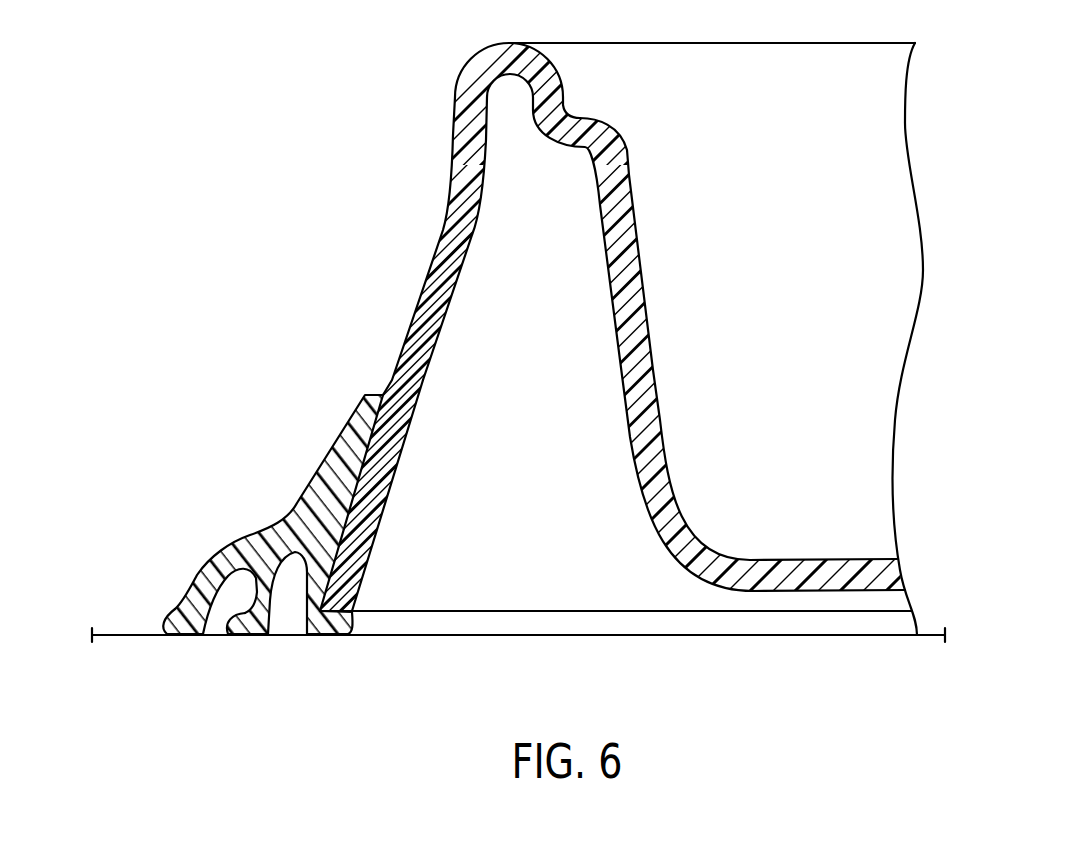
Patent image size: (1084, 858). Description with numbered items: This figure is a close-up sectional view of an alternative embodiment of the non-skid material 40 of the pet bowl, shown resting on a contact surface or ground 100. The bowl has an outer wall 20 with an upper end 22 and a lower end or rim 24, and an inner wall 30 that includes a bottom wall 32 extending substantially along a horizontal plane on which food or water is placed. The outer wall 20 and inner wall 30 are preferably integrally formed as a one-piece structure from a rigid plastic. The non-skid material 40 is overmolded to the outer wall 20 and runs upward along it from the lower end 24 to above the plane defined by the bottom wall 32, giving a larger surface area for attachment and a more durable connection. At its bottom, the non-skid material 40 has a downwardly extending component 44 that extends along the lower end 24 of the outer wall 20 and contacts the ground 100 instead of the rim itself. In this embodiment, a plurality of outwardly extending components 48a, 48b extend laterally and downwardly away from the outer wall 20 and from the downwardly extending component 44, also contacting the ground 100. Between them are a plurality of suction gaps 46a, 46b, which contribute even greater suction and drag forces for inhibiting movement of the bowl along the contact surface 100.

The outer wall 20 is at (452, 176).
The upper end 22 is at (490, 68).
The lower end or rim 24 is at (343, 593).
The inner wall 30 is at (643, 282).
The bottom wall 32 is at (838, 562).
The non-skid material 40 is at (280, 400).
The downwardly extending component 44 is at (327, 635).
The suction gap 46a is at (291, 596).
The suction gap 46b is at (223, 603).
The outwardly extending component 48a is at (253, 637).
The outwardly extending component 48b is at (175, 636).
The contact surface (ground) 100 is at (121, 633).